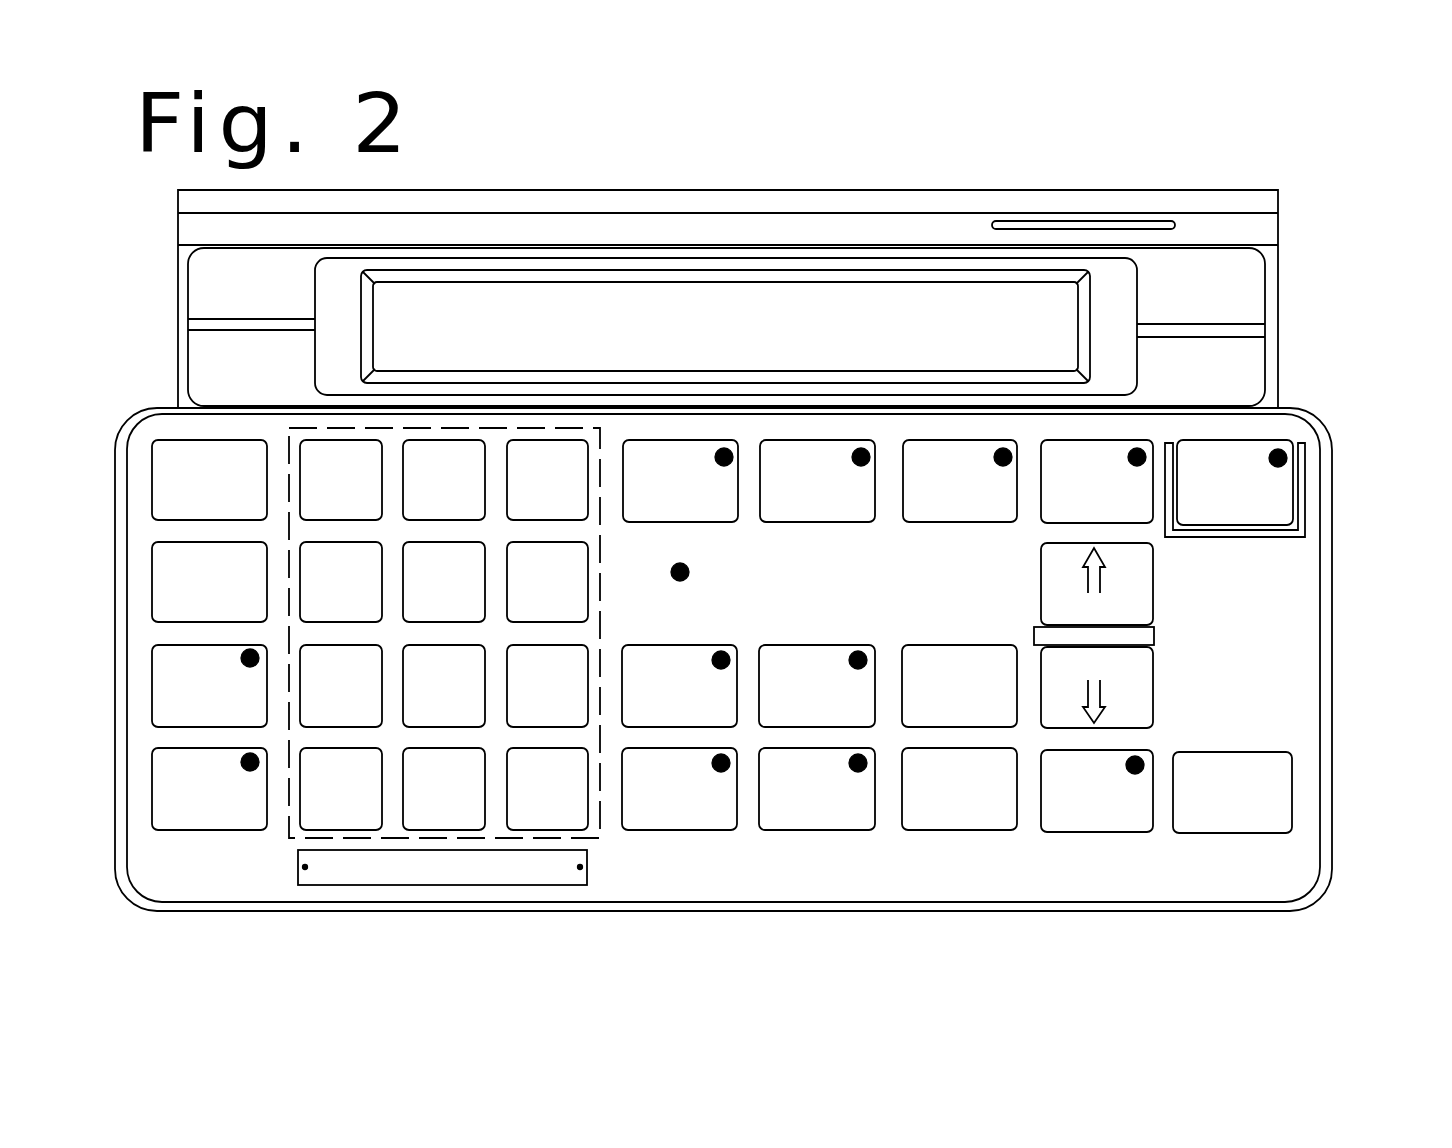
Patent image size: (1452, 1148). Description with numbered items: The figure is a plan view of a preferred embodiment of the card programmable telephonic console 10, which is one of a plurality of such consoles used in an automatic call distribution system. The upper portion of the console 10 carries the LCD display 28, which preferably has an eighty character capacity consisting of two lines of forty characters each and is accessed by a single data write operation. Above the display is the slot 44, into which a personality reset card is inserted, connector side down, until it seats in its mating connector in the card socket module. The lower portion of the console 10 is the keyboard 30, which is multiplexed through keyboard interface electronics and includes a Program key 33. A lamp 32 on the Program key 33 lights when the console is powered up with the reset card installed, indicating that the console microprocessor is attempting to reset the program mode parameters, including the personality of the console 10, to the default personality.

The telephonic console 10 is at (1292, 332).
The LCD display 28 is at (388, 293).
The keyboard 30 is at (1255, 690).
The lamp 32 is at (725, 450).
The Program key 33 is at (642, 450).
The slot 44 is at (1120, 228).